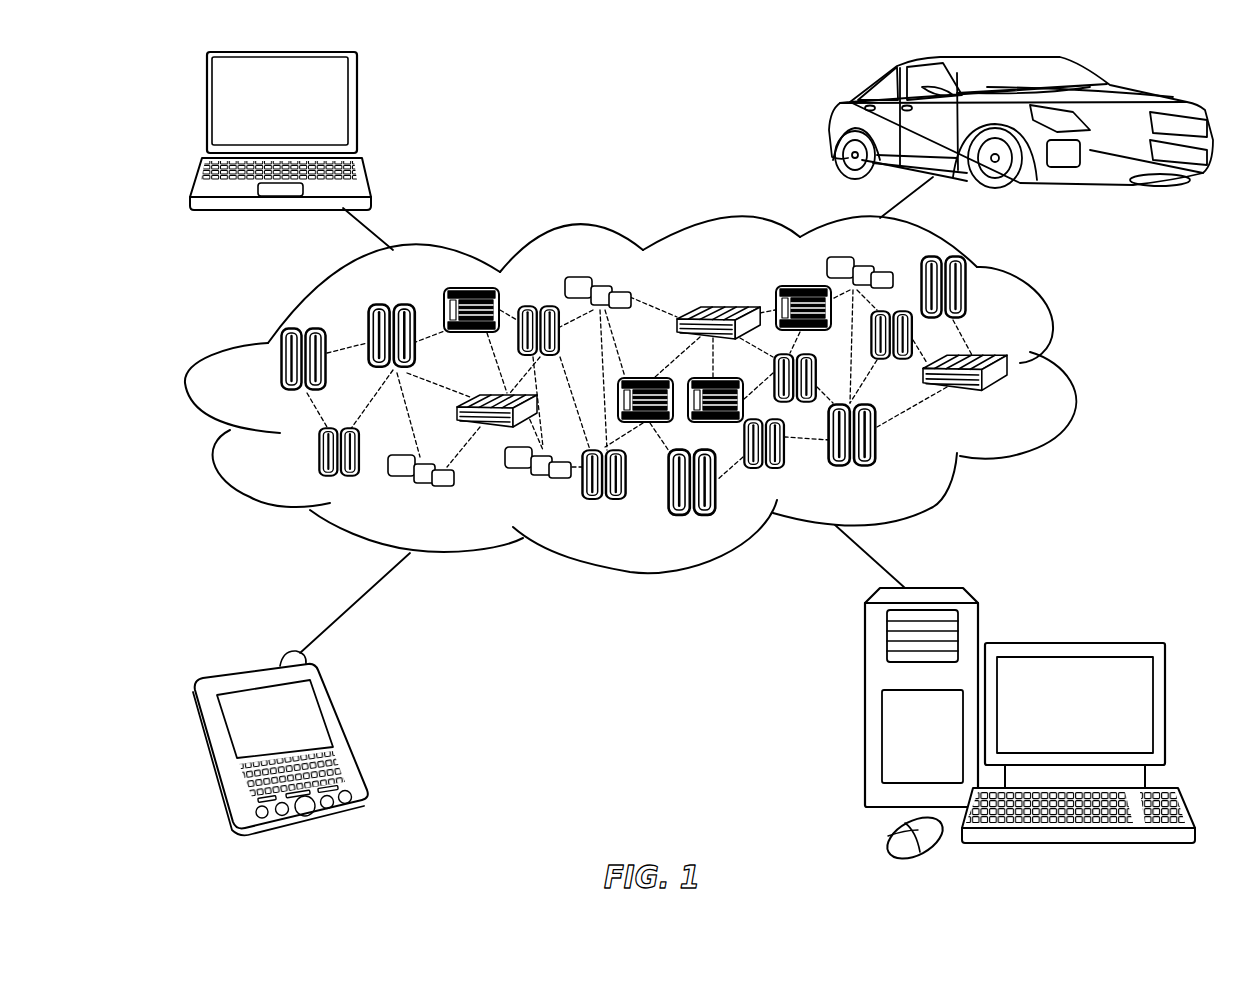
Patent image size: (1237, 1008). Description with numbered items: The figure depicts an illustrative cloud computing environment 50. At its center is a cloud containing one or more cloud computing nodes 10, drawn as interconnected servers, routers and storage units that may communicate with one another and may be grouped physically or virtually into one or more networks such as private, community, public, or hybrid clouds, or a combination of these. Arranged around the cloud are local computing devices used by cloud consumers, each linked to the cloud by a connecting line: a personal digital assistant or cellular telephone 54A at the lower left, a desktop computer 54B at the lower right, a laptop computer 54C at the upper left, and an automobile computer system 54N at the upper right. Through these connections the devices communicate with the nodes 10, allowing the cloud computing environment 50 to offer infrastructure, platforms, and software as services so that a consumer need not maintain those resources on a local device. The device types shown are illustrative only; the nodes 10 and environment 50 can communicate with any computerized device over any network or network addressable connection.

The cloud computing nodes 10 is at (702, 386).
The cloud computing environment 50 is at (1073, 370).
The personal digital assistant (PDA) or cellular telephone 54A is at (347, 733).
The desktop computer 54B is at (1072, 643).
The laptop computer 54C is at (358, 110).
The automobile computer system 54N is at (833, 122).